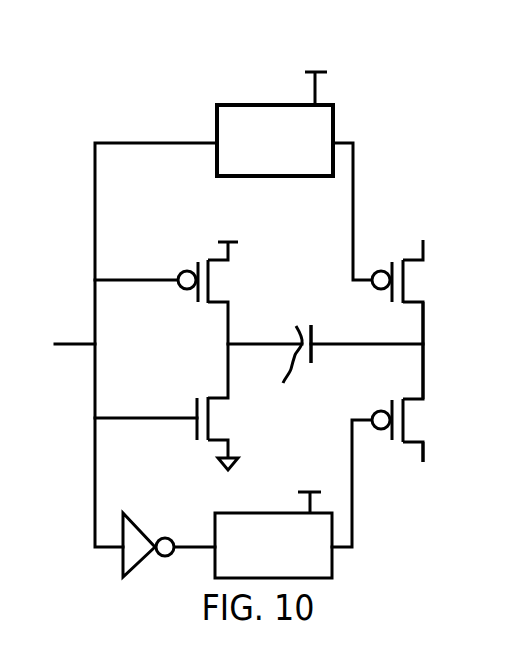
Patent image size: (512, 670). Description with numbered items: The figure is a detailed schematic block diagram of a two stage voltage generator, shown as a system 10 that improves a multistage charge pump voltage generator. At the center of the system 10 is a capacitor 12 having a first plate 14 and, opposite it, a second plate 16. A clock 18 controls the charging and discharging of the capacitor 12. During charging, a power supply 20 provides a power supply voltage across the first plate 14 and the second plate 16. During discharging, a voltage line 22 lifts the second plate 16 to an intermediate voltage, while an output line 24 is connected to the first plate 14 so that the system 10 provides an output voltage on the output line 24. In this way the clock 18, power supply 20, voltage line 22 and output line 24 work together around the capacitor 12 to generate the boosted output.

The system 10 is at (144, 86).
The capacitor 12 is at (295, 320).
The first plate 14 is at (311, 361).
The second plate 16 is at (286, 374).
The clock 18 is at (68, 341).
The power supply 20 is at (415, 486).
The voltage line 22 is at (228, 369).
The output line 24 is at (424, 327).